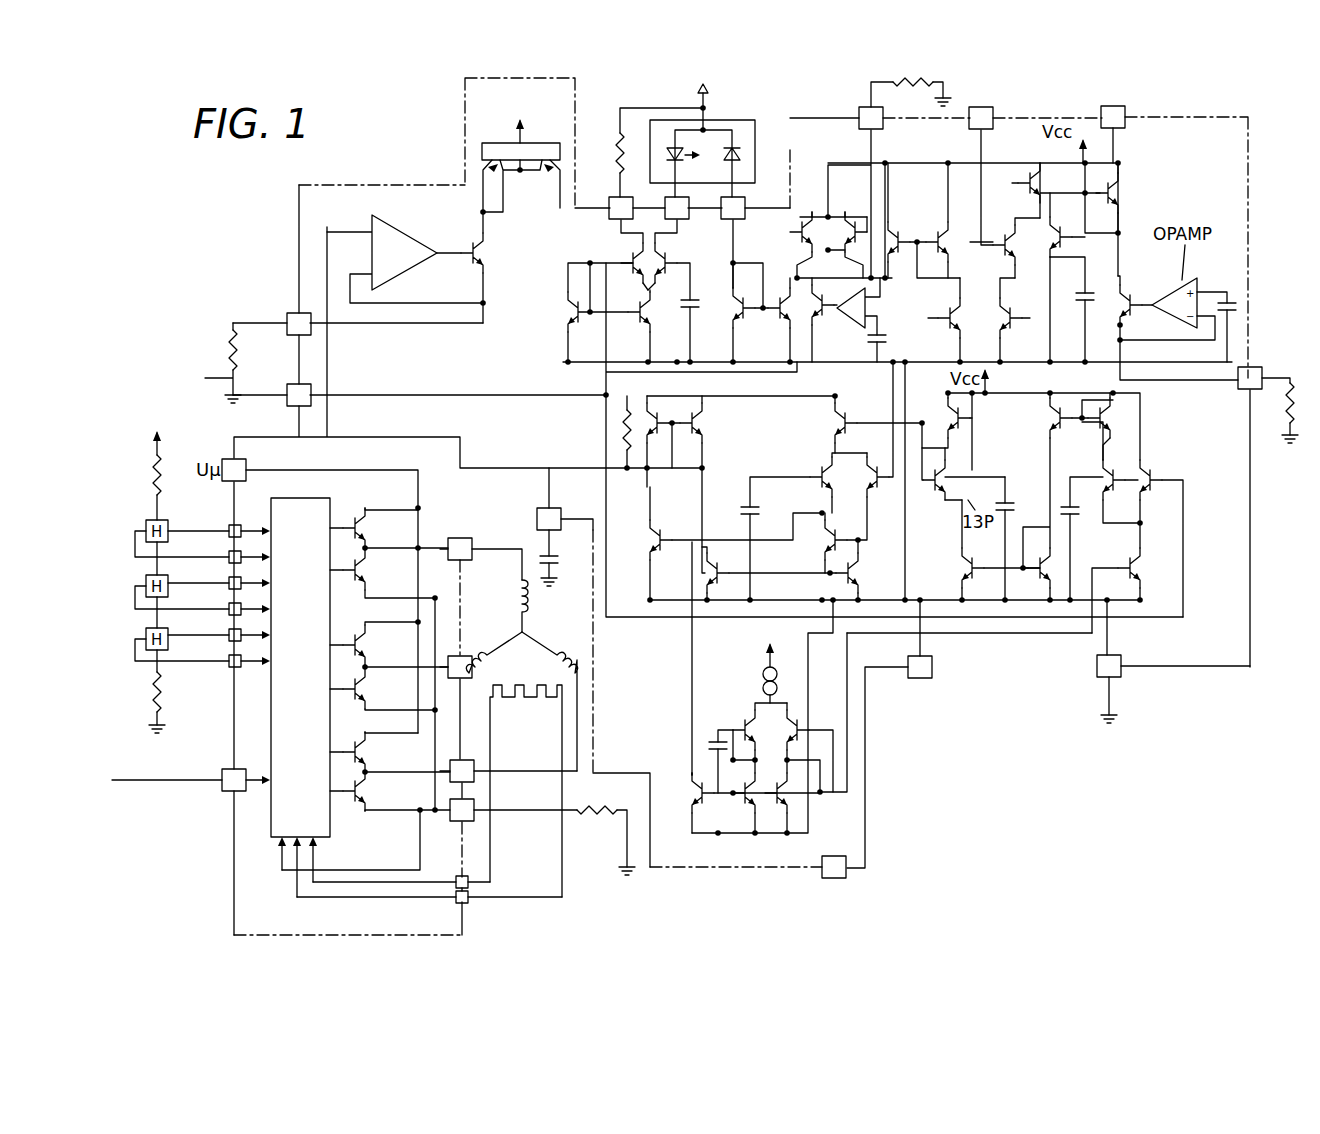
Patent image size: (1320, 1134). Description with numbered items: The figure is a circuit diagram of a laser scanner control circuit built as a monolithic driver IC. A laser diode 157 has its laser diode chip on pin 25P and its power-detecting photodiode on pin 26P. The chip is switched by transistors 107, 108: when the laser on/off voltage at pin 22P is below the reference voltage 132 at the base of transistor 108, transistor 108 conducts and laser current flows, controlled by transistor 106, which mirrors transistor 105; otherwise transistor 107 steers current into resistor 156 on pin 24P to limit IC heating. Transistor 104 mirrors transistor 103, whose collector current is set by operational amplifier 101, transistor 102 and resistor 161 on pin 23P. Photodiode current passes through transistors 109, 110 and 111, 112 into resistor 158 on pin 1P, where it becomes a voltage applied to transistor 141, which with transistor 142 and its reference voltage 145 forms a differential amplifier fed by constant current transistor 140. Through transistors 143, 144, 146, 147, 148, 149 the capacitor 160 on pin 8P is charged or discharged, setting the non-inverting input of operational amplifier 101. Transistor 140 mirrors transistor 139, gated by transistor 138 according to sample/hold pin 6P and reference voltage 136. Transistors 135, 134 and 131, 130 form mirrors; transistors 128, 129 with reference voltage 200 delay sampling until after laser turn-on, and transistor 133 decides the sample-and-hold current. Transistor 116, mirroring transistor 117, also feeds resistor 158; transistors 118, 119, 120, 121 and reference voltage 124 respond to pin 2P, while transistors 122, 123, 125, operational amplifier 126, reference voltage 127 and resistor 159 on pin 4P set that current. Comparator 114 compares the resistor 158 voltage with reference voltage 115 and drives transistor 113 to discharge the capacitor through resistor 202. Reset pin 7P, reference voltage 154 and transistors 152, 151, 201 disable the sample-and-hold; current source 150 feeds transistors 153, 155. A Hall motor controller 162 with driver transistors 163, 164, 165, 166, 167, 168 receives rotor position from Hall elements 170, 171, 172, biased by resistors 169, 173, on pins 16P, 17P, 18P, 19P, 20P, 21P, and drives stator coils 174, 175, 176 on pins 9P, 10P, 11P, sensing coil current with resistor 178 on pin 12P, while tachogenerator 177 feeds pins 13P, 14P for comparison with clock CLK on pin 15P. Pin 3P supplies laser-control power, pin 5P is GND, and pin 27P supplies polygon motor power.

The operational amplifier 101 is at (398, 225).
The transistor 102 is at (485, 256).
The transistor 103 is at (492, 140).
The transistor 104 is at (547, 140).
The transistor 105 is at (565, 330).
The transistor 106 is at (655, 330).
The transistor 107 is at (622, 262).
The transistor 108 is at (678, 262).
The transistor 109 is at (730, 330).
The transistor 110 is at (778, 328).
The transistor 111 is at (808, 215).
The transistor 112 is at (848, 215).
The transistor 113 is at (815, 340).
The comparator 114 is at (855, 325).
The reference voltage 115 is at (874, 350).
The transistor 116 is at (895, 222).
The transistor 117 is at (955, 225).
The transistor 118 is at (945, 330).
The transistor 119 is at (1003, 330).
The transistor 120 is at (1008, 228).
The transistor 121 is at (1055, 215).
The transistor 122 is at (1022, 186).
The transistor 123 is at (1115, 195).
The reference voltage 124 is at (1075, 298).
The transistor 125 is at (1128, 290).
The operational amplifier 126 is at (1178, 325).
The reference voltage 127 is at (1228, 295).
The transistor 128 is at (1158, 470).
The transistor 129 is at (1098, 468).
The transistor 130 is at (1125, 422).
The transistor 131 is at (1048, 422).
The reference voltage 132 is at (696, 302).
The transistor 133 is at (1132, 570).
The transistor 134 is at (1058, 565).
The transistor 135 is at (960, 566).
The reference voltage 136 is at (1008, 490).
The transistor 138 is at (943, 500).
The transistor 139 is at (962, 422).
The transistor 140 is at (838, 428).
The transistor 141 is at (872, 462).
The transistor 142 is at (830, 462).
The transistor 143 is at (862, 560).
The transistor 144 is at (843, 528).
The reference voltage 145 is at (743, 505).
The transistor 146 is at (735, 535).
The transistor 147 is at (665, 530).
The transistor 148 is at (703, 428).
The transistor 149 is at (640, 430).
The current source 150 is at (760, 672).
The transistor 151 is at (787, 712).
The transistor 152 is at (748, 712).
The transistor 153 is at (750, 820).
The reference voltage 154 is at (716, 735).
The transistor 155 is at (695, 820).
The resistor 156 is at (615, 162).
The laser diode 157 is at (655, 118).
The resistor 158 is at (928, 82).
The resistor 159 is at (1292, 390).
The capacitor 160 is at (540, 560).
The resistor 161 is at (226, 340).
The Hall motor controller 162 is at (325, 496).
The driver transistor 163 is at (368, 530).
The driver transistor 164 is at (368, 574).
The driver transistor 165 is at (368, 646).
The driver transistor 166 is at (368, 690).
The driver transistor 167 is at (368, 754).
The driver transistor 168 is at (368, 793).
The resistor 169 is at (152, 470).
The Hall element 170 is at (145, 530).
The Hall element 171 is at (145, 585).
The Hall element 172 is at (145, 638).
The resistor 173 is at (150, 690).
The stator coil 174 is at (518, 598).
The stator coil 175 is at (498, 640).
The stator coil 176 is at (552, 648).
The tachogenerator 177 is at (528, 703).
The resistor 178 is at (596, 825).
The reference voltage 200 is at (1063, 500).
The transistor 201 is at (790, 820).
The resistor 202 is at (620, 420).
The pin 1P is at (858, 110).
The pin 2P is at (994, 112).
The pin 3P is at (1126, 112).
The pin 4P is at (1255, 365).
The pin 5P is at (1097, 668).
The pin 6P is at (932, 670).
The reset pin 7P is at (847, 864).
The pin 8P is at (538, 514).
The pin 9P is at (473, 544).
The pin 10P is at (473, 668).
The pin 11P is at (475, 765).
The pin 12P is at (475, 806).
The pin 13P is at (469, 878).
The pin 14P is at (468, 903).
The pin 15P is at (222, 776).
The pin 16P is at (228, 658).
The pin 17P is at (228, 632).
The pin 18P is at (228, 606).
The pin 19P is at (228, 580).
The pin 20P is at (228, 554).
The pin 21P is at (228, 528).
The pin 22P is at (286, 402).
The pin 23P is at (285, 320).
The pin 24P is at (608, 215).
The pin 25P is at (680, 222).
The pin 26P is at (746, 214).
The pin 27P is at (222, 460).